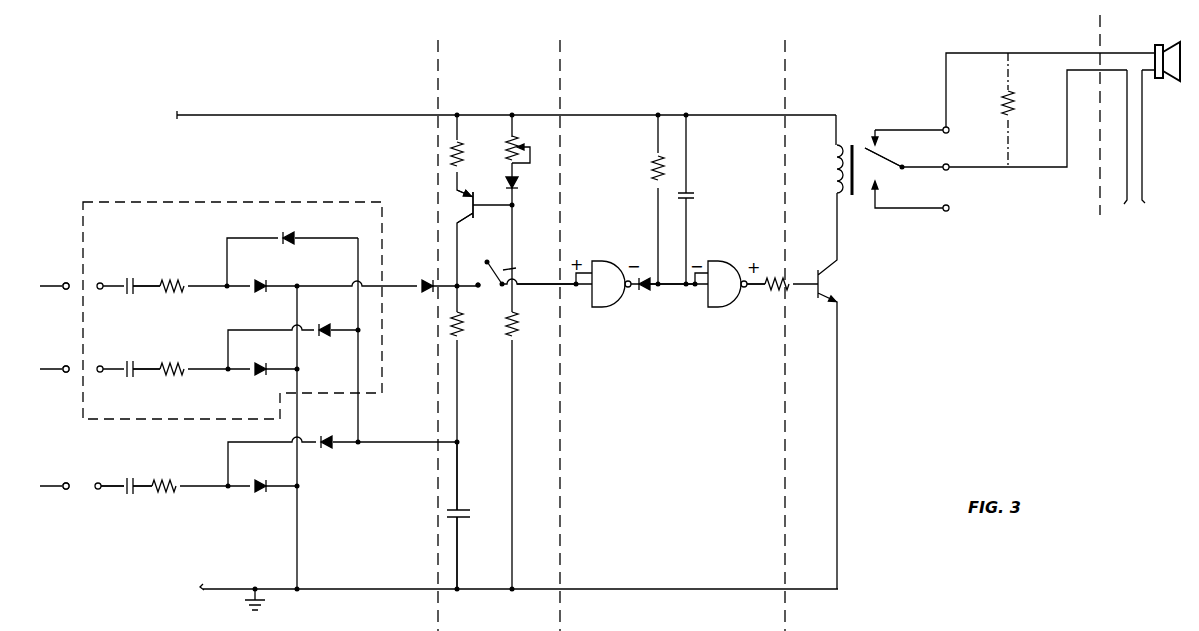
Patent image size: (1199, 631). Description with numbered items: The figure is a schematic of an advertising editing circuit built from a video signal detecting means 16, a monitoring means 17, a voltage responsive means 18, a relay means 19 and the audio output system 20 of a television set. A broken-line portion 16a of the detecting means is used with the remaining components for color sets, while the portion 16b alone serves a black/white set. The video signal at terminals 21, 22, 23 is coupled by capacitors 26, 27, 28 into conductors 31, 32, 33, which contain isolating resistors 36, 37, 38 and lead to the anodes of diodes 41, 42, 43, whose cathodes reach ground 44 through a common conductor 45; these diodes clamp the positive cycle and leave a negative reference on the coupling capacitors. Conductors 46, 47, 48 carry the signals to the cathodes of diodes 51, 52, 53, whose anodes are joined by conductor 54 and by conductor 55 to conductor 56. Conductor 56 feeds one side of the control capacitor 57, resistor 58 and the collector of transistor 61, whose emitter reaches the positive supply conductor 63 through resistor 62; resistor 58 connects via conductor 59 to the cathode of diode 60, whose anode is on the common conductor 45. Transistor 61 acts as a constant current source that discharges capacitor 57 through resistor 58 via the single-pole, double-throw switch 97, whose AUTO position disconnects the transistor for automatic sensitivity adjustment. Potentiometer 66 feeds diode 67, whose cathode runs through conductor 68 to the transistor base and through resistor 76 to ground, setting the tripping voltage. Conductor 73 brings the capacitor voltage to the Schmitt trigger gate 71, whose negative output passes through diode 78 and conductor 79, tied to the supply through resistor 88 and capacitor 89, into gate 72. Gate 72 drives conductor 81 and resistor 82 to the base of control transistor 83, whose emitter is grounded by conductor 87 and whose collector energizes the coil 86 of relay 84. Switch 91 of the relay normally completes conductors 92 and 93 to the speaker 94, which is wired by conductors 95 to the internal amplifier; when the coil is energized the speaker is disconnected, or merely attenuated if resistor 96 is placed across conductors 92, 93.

The video signal detecting means 16 is at (207, 112).
The portion of video signal detecting means 16a is at (185, 200).
The portion of video signal detecting means 16b is at (141, 490).
The video signal monitoring means 17 is at (504, 98).
The voltage responsive means 18 is at (670, 98).
The relay means 19 is at (840, 92).
The audio output system 20 is at (1010, 46).
The terminal 21 is at (67, 283).
The terminal 22 is at (67, 365).
The terminal 23 is at (67, 482).
The capacitor 26 is at (132, 278).
The capacitor 27 is at (126, 362).
The capacitor 28 is at (132, 480).
The conductor 31 is at (137, 288).
The conductor 32 is at (138, 364).
The conductor 33 is at (147, 482).
The resistor 36 is at (185, 282).
The resistor 37 is at (178, 362).
The resistor 38 is at (181, 480).
The diode 41 is at (263, 283).
The diode 42 is at (258, 364).
The diode 43 is at (257, 480).
The ground 44 is at (331, 590).
The common conductor 45 is at (298, 533).
The conductor 46 is at (262, 237).
The conductor 47 is at (281, 330).
The conductor 48 is at (325, 440).
The diode 51 is at (292, 237).
The diode 52 is at (320, 329).
The diode 53 is at (330, 440).
The conductor 54 is at (359, 347).
The conductor 55 is at (415, 444).
The conductor 56 is at (458, 476).
The control capacitor 57 is at (447, 513).
The resistor 58 is at (459, 334).
The conductor 59 is at (478, 290).
The diode 60 is at (430, 280).
The transistor 61 is at (468, 222).
The resistor 62 is at (458, 152).
The conductor 63 is at (340, 114).
The potentiometer 66 is at (513, 141).
The diode 67 is at (518, 183).
The conductor 68 is at (515, 204).
The control gate 71 is at (598, 308).
The control gate 72 is at (718, 309).
The conductor 73 is at (533, 290).
The resistor 76 is at (516, 330).
The diode 78 is at (646, 290).
The conductor 79 is at (668, 289).
The conductor 81 is at (749, 290).
The resistor 82 is at (781, 278).
The control transistor 83 is at (836, 296).
The relay 84 is at (853, 140).
The relay coil 86 is at (834, 170).
The conductor 87 is at (838, 443).
The resistor 88 is at (655, 166).
The capacitor 89 is at (690, 190).
The switch 91 is at (887, 157).
The conductor 92 is at (945, 92).
The conductor 93 is at (1022, 168).
The speaker 94 is at (1166, 82).
The conductor 95 is at (1127, 165).
The resistor 96 is at (1012, 92).
The switch 97 is at (493, 260).